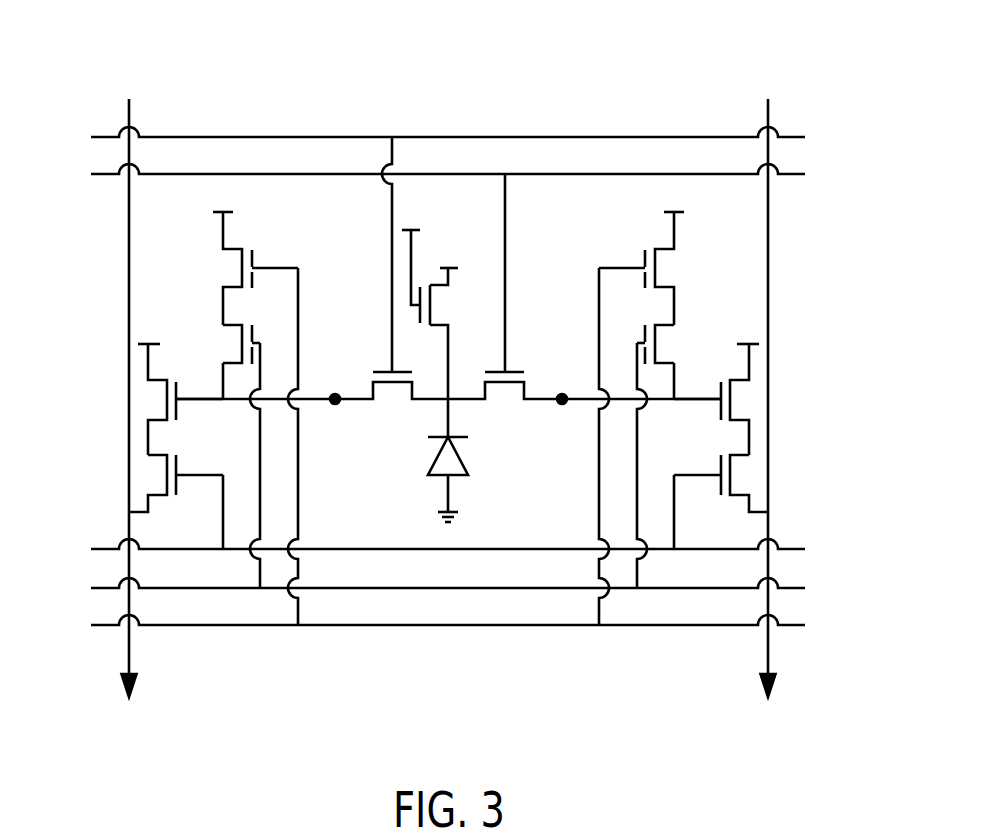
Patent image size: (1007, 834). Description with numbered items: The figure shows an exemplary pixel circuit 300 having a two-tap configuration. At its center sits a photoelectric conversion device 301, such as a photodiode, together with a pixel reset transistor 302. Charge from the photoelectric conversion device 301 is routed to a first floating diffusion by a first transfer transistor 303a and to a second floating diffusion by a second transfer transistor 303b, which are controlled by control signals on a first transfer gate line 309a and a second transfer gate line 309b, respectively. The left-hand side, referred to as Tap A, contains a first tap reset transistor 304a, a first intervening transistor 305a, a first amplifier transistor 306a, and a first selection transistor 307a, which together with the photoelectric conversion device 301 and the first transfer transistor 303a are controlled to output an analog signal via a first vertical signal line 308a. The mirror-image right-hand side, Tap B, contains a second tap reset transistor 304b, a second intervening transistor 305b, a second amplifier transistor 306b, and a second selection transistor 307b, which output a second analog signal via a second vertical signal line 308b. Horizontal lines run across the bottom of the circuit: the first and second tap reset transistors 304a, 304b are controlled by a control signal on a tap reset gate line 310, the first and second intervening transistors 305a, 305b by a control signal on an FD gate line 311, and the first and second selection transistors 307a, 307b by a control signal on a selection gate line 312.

The pixel circuit 300 is at (112, 61).
The photoelectric conversion device 301 is at (430, 477).
The pixel reset transistor 302 is at (438, 283).
The first transfer transistor 303a is at (378, 366).
The second transfer transistor 303b is at (519, 366).
The first tap reset transistor 304a is at (223, 249).
The second tap reset transistor 304b is at (674, 249).
The first intervening transistor 305a is at (223, 325).
The second intervening transistor 305b is at (674, 325).
The first amplifier transistor 306a is at (167, 381).
The second amplifier transistor 306b is at (730, 381).
The first selection transistor 307a is at (167, 457).
The second selection transistor 307b is at (730, 457).
The first vertical signal line 308a is at (128, 659).
The second vertical signal line 308b is at (775, 657).
The first transfer gate line 309a is at (219, 137).
The second transfer gate line 309b is at (666, 137).
The tap reset gate line 310 is at (214, 626).
The FD gate line 311 is at (540, 588).
The selection gate line 312 is at (693, 549).